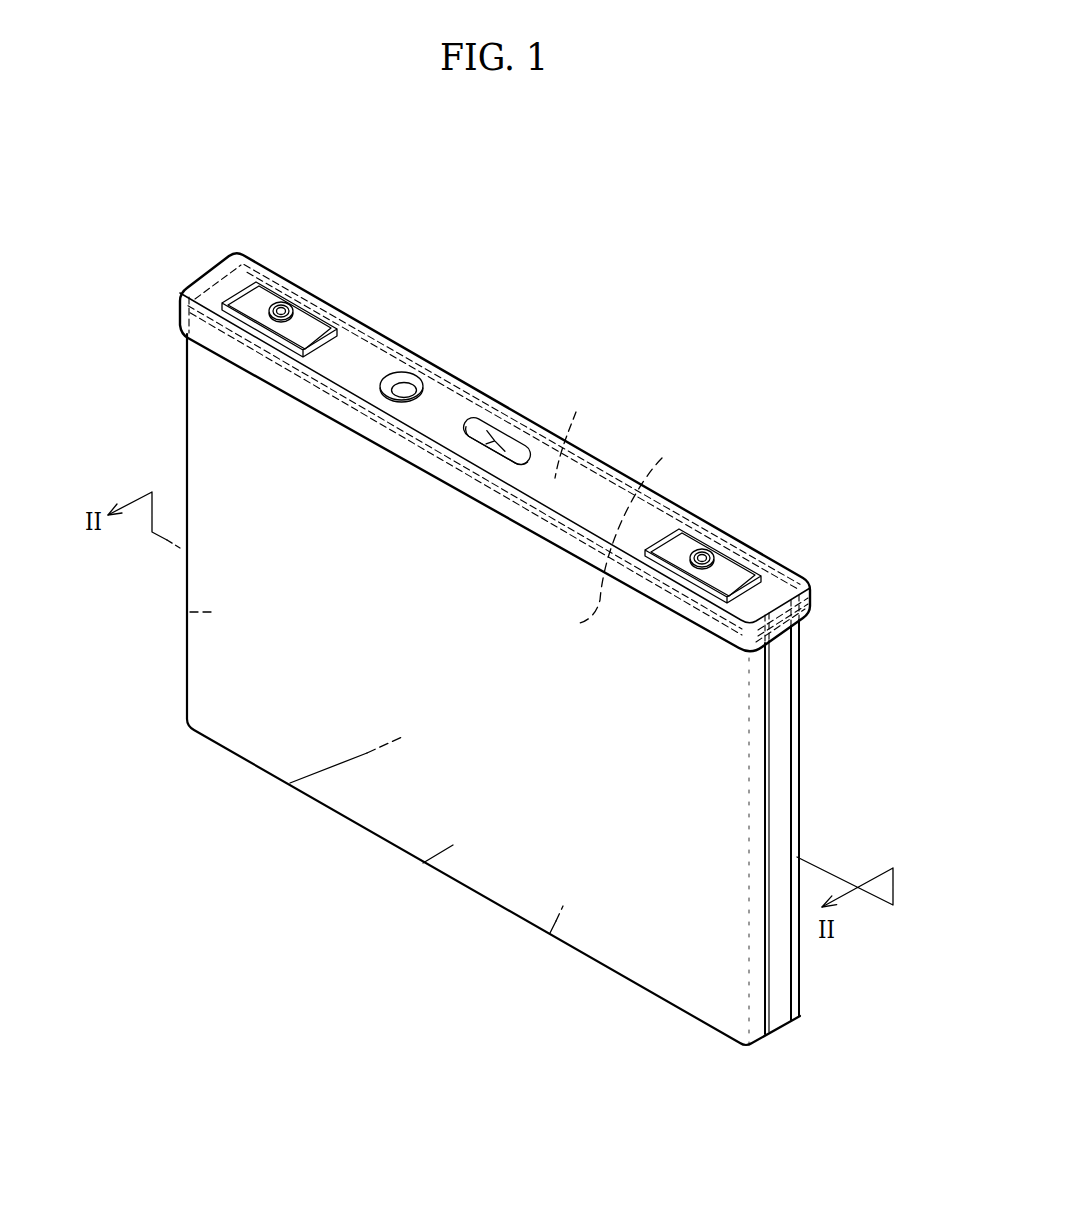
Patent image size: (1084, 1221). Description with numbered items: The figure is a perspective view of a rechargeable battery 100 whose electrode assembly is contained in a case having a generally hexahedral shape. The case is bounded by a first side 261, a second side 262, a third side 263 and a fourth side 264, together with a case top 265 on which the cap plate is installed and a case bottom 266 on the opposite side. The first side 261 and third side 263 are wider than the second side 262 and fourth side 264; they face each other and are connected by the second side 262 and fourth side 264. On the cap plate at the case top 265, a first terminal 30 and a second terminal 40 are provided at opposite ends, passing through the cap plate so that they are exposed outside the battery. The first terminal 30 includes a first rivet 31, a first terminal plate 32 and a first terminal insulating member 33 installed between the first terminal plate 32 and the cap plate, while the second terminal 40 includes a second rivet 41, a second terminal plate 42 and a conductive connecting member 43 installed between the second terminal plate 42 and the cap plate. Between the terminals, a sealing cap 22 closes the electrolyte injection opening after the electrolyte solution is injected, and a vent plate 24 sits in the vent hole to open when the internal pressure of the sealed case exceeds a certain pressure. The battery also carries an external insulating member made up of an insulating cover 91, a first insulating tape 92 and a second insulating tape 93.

The rechargeable battery 100 is at (583, 215).
The sealing cap 22 is at (403, 384).
The vent plate 24 is at (497, 444).
The first terminal 30 is at (310, 271).
The first rivet 31 is at (298, 263).
The first terminal plate 32 is at (300, 322).
The first terminal insulating member 33 is at (333, 332).
The second terminal 40 is at (731, 516).
The second rivet 41 is at (718, 510).
The second terminal plate 42 is at (727, 566).
The conductive connecting member 43 is at (755, 580).
The insulating cover 91 is at (592, 476).
The first insulating tape 92 is at (423, 863).
The second insulating tape 93 is at (792, 719).
The first side 261 is at (290, 783).
The second side 262 is at (777, 760).
The third side 263 is at (662, 458).
The fourth side 264 is at (190, 612).
The case top 265 is at (576, 412).
The case bottom 266 is at (550, 933).